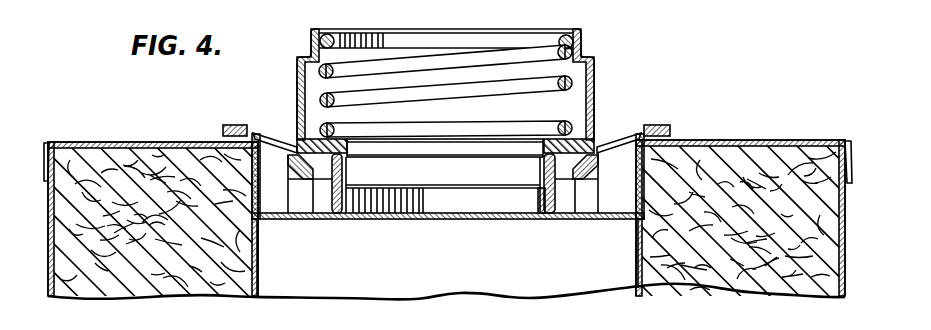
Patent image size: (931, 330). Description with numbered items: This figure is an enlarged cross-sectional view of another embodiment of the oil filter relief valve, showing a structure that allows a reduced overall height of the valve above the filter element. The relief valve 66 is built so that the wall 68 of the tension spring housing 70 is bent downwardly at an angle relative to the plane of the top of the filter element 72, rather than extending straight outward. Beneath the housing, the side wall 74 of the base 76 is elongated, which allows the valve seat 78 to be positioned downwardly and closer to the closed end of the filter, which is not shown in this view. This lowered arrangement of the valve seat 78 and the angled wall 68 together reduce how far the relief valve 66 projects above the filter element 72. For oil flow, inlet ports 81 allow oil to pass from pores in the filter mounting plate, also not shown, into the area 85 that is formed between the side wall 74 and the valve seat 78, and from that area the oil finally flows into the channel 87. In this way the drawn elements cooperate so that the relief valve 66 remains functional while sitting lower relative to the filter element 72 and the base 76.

The relief valve 66 is at (490, 91).
The wall 68 is at (629, 133).
The tension spring housing 70 is at (596, 66).
The filter element 72 is at (760, 148).
The side wall 74 is at (627, 188).
The base 76 is at (547, 200).
The valve seat 78 is at (542, 195).
The inlet ports 81 is at (290, 141).
The area 85 is at (273, 197).
The channel 87 is at (306, 200).